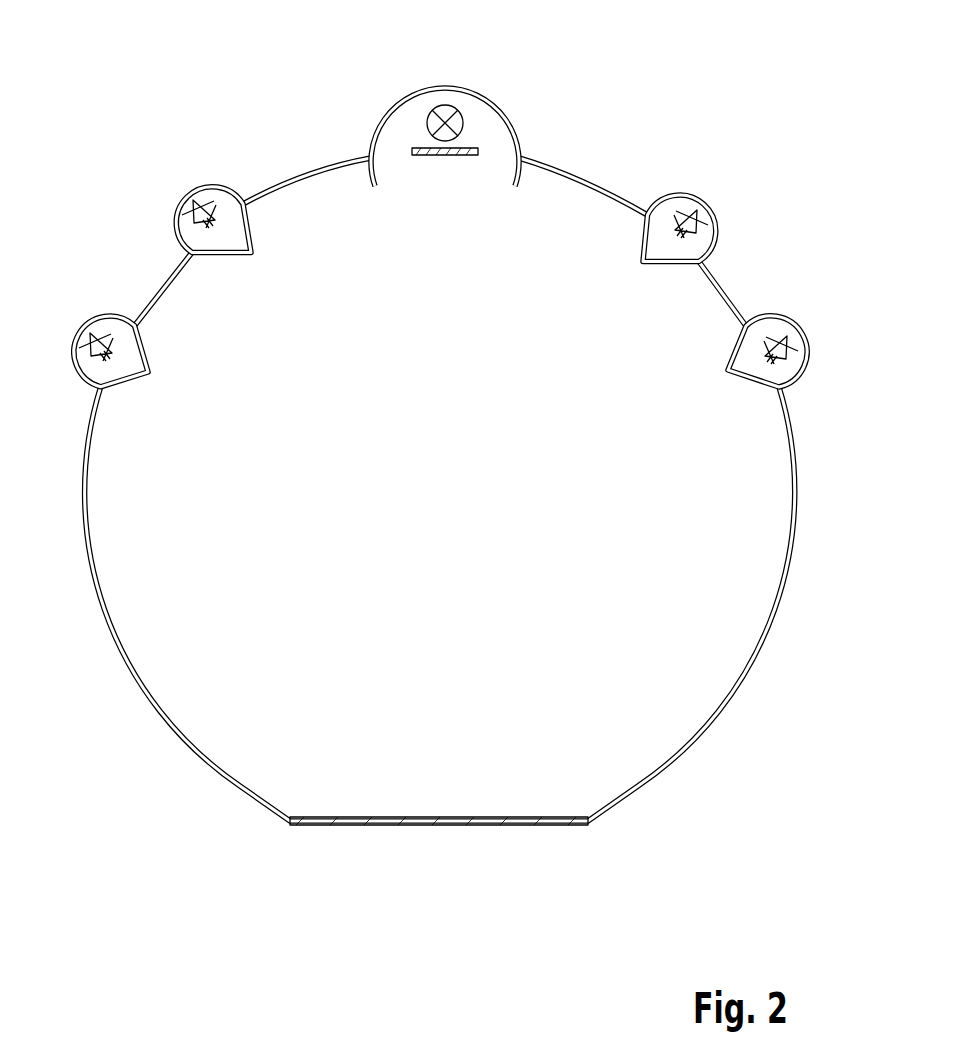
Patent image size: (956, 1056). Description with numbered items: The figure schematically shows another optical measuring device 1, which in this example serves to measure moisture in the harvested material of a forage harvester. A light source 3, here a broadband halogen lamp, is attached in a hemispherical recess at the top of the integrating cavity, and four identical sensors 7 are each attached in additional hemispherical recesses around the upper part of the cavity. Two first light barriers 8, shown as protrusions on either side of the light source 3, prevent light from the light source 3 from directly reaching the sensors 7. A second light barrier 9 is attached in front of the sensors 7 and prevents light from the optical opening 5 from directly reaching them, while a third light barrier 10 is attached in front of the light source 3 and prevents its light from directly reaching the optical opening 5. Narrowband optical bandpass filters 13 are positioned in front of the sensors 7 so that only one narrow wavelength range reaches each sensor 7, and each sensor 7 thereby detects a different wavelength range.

The optical measuring device 1 is at (753, 137).
The light source 3 is at (464, 121).
The optical opening 5 is at (560, 826).
The sensors 7 is at (104, 340).
The first light barriers 8 is at (378, 177).
The second light barrier 9 is at (143, 388).
The third light barrier 10 is at (420, 148).
The narrowband optical bandpass filters 13 is at (253, 238).